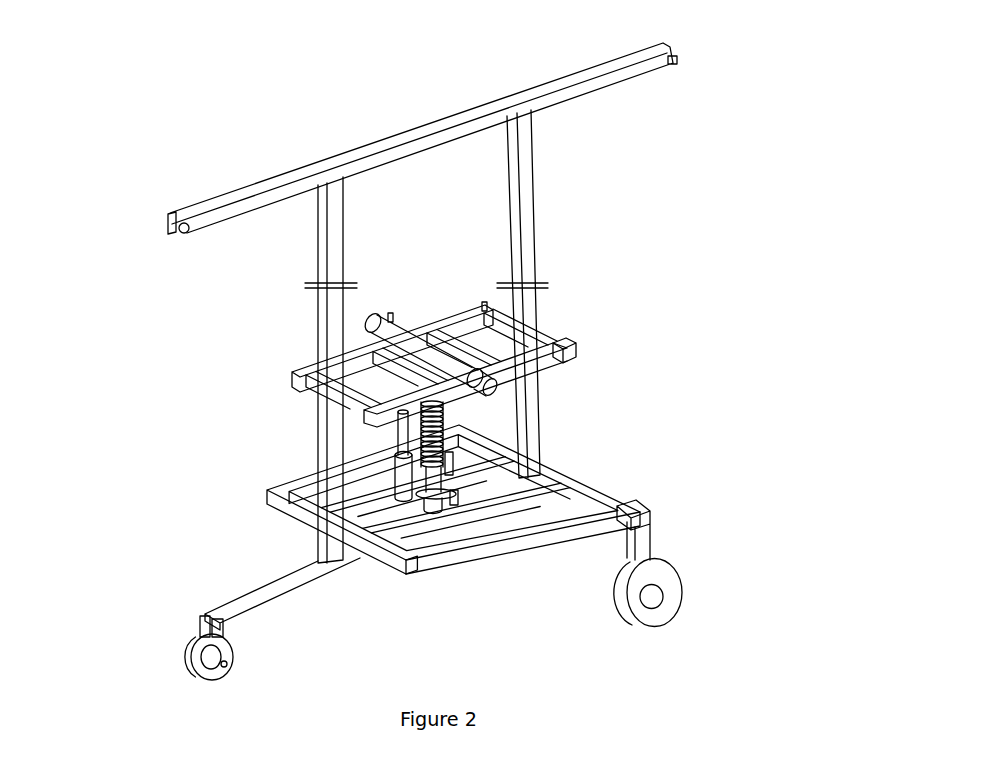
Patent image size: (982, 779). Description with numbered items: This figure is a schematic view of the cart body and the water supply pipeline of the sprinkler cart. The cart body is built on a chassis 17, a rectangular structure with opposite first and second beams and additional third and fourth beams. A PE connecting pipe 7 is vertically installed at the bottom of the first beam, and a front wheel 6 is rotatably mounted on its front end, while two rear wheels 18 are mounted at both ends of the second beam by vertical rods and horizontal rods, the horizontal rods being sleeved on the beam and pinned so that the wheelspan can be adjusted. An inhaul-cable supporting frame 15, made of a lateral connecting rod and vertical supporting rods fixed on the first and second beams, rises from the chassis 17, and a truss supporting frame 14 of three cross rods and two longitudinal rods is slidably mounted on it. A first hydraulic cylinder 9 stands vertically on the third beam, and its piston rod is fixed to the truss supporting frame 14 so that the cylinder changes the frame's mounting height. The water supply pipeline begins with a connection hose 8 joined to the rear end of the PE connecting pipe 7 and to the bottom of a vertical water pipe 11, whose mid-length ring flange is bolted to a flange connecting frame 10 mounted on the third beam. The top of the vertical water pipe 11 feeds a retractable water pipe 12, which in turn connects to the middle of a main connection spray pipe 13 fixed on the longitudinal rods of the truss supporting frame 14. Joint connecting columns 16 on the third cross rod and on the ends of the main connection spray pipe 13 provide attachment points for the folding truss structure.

The front wheel 6 is at (193, 650).
The PE connecting pipe 7 is at (250, 603).
The connection hose 8 is at (300, 488).
The first hydraulic cylinder 9 is at (393, 482).
The flange connecting frame 10 is at (421, 486).
The vertical water pipe 11 is at (398, 445).
The retractable water pipe 12 is at (325, 360).
The main connection spray pipe 13 is at (328, 292).
The truss supporting frame 14 is at (450, 320).
The inhaul-cable supporting frame 15 is at (307, 167).
The joint connecting column 16 is at (520, 325).
The chassis 17 is at (500, 527).
The rear wheel 18 is at (648, 553).